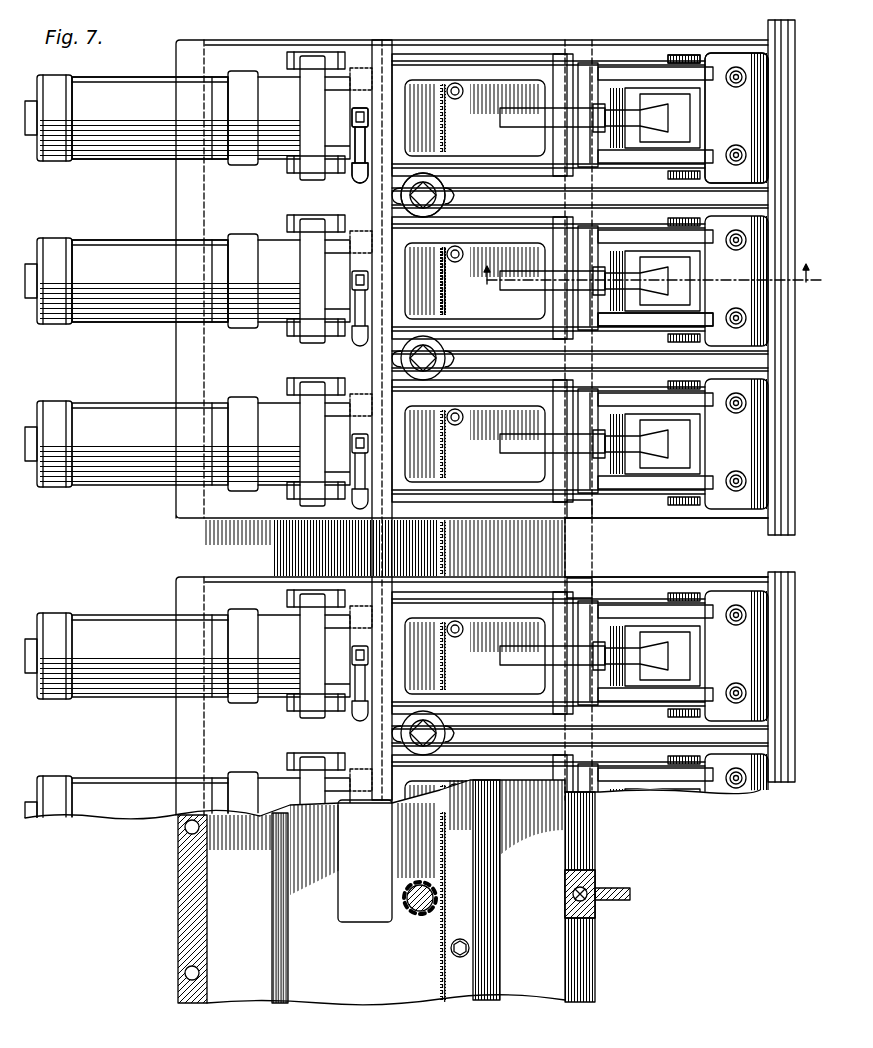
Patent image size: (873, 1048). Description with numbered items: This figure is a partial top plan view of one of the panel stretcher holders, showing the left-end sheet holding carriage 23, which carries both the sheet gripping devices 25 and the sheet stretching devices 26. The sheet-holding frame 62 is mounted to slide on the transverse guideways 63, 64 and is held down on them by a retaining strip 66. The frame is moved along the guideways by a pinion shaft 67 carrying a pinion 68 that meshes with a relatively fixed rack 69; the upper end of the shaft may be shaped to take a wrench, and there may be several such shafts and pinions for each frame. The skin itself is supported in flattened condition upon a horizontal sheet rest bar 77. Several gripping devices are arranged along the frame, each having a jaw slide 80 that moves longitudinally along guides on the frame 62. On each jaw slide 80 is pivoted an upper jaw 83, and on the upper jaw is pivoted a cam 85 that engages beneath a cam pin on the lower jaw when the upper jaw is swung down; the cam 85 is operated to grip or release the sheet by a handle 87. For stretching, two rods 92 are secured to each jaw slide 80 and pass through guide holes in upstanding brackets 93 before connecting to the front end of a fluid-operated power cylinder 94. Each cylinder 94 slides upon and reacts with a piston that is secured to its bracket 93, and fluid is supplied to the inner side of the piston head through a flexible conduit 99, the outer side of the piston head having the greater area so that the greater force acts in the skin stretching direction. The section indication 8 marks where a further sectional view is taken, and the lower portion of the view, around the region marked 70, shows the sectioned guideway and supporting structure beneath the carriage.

The sheet stretching device 26 is at (161, 76).
The sheet gripping device 25 is at (640, 66).
The upper jaw 83 is at (718, 92).
The rod 92 is at (523, 70).
The pinion shaft 67 is at (437, 195).
The rack 69 is at (447, 250).
The flexible conduit 99 is at (350, 186).
The bracket 93 is at (380, 205).
The fluid-operated power cylinder 94 is at (193, 248).
The handle 87 is at (535, 288).
The cam 85 is at (660, 300).
The section line 8- 8 is at (646, 285).
The jaw slide 80 is at (587, 505).
The transverse guideway 64 is at (553, 552).
The sheet-holding frame 62 is at (659, 520).
The sheet rest bar 77 is at (770, 528).
The transverse guideway 63 is at (218, 556).
The sheet holding carriage 23 is at (596, 828).
The pinion 68 is at (418, 914).
The retaining strip 66 is at (585, 962).
The base 70 is at (312, 985).